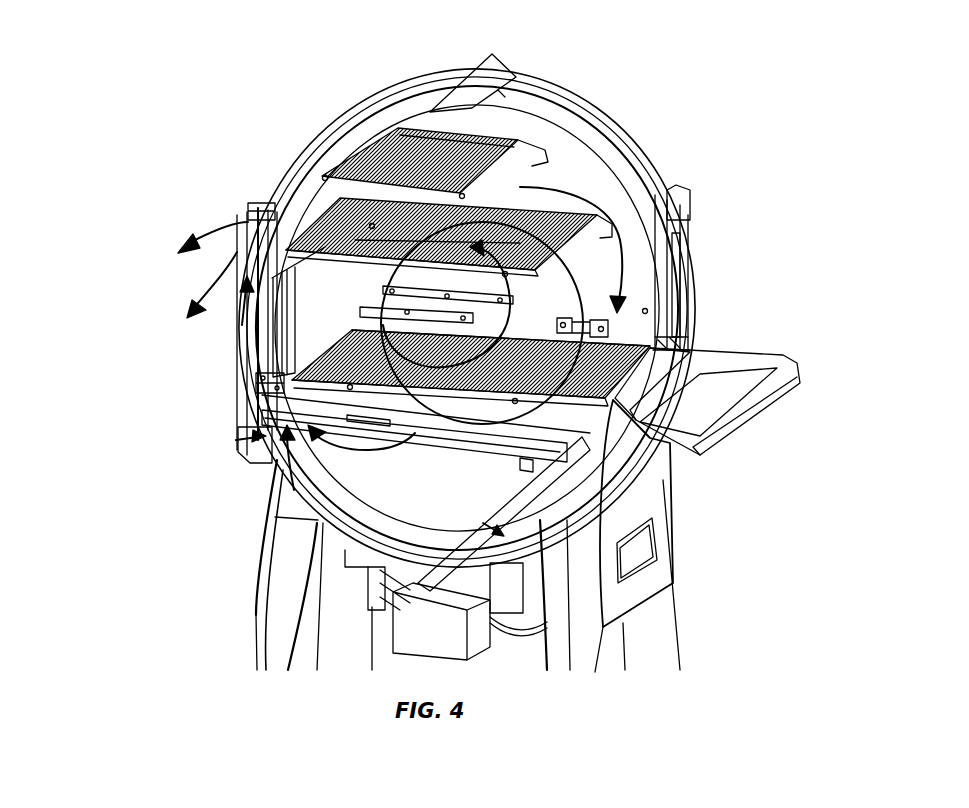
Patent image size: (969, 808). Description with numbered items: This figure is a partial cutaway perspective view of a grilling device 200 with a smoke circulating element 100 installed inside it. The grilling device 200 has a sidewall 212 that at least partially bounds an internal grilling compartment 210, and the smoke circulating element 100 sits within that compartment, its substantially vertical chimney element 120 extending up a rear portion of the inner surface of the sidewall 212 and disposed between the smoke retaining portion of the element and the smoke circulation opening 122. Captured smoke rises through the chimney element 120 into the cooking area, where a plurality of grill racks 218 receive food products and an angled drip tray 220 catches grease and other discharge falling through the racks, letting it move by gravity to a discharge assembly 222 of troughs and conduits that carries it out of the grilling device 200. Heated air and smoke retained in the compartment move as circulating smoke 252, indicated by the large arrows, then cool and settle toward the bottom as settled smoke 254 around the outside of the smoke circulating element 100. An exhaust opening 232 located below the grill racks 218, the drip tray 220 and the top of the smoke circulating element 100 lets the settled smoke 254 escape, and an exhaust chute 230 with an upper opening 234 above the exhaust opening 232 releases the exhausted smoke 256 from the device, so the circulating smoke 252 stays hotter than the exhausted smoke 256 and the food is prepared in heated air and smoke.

The smoke circulating element 100 is at (368, 491).
The chimney element 120 is at (330, 292).
The smoke circulation opening 122 is at (312, 305).
The grilling device 200 is at (268, 133).
The internal grilling compartment 210 is at (640, 268).
The sidewall 212 is at (586, 151).
The grill racks 218 is at (636, 349).
The drip tray 220 is at (563, 426).
The discharge assembly 222 is at (547, 563).
The exhaust chute 230 is at (258, 384).
The exhaust opening 232 is at (245, 440).
The upper opening 234 is at (246, 218).
The circulating smoke 252 is at (427, 228).
The settled smoke 254 is at (328, 435).
The exhausted smoke 256 is at (215, 232).